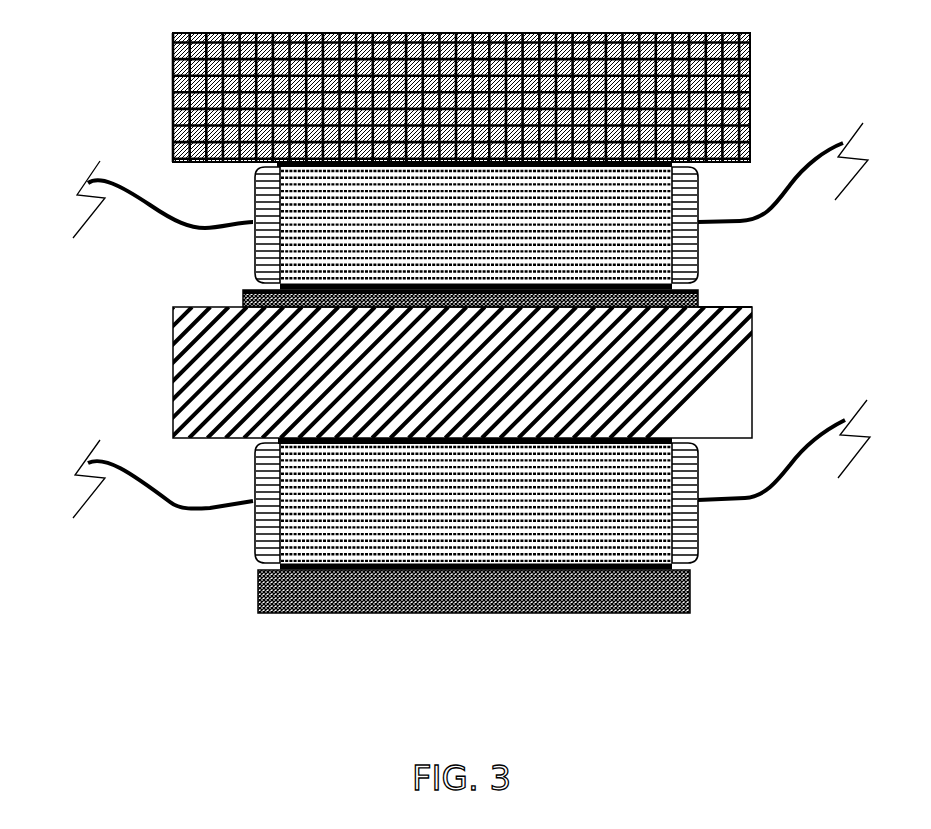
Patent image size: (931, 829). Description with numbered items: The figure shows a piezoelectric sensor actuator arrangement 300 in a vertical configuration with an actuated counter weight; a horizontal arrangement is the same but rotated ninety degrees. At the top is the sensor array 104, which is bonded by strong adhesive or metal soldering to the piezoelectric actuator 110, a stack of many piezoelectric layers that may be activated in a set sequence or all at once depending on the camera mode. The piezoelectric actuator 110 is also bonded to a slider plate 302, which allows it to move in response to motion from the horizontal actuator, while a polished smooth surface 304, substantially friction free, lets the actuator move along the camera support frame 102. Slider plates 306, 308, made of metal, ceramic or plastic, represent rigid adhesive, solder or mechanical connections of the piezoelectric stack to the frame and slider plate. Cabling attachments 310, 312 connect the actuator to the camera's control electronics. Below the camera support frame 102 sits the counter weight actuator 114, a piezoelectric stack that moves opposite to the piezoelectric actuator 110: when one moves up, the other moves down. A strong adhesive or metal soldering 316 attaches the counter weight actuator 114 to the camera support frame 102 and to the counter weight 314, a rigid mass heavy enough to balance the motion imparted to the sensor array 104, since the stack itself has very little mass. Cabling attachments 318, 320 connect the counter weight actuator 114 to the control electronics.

The camera support frame 102 is at (752, 392).
The sensor array 104 is at (172, 63).
The piezoelectric actuator 110 is at (633, 197).
The counter weight actuator 114 is at (658, 513).
The piezoelectric sensor actuator arrangement 300 is at (480, 714).
The slider plate 302 is at (243, 293).
The polished smooth surface 304 is at (730, 306).
The slider plate 306 is at (320, 168).
The slider plate 308 is at (292, 283).
The cabling attachment 310 is at (125, 180).
The cabling attachment 312 is at (803, 160).
The counter weight 314 is at (592, 612).
The strong adhesive or metal soldering 316 is at (347, 442).
The cabling attachment 318 is at (183, 512).
The cabling attachment 320 is at (797, 462).